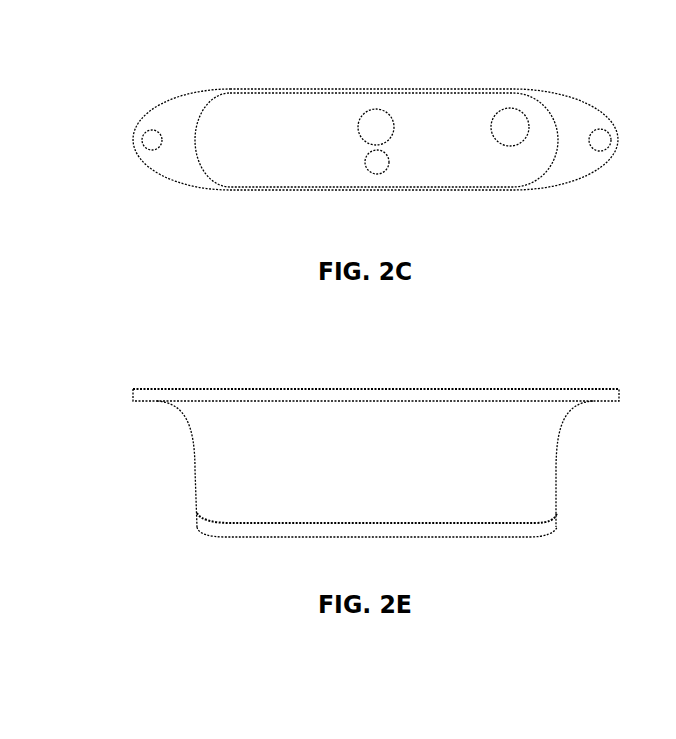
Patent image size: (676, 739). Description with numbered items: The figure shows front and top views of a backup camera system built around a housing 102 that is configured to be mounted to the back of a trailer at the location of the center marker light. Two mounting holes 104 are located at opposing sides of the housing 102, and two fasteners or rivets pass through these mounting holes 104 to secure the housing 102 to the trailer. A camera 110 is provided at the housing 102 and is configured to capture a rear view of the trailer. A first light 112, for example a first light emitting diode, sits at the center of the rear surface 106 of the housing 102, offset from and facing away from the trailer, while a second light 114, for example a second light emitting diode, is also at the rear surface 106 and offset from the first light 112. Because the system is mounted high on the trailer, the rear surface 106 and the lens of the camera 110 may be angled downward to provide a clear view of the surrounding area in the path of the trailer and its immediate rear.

In FIG. 2C, the housing 102 is at (577, 98).
In FIG. 2E, the housing 102 is at (554, 390).
In FIG. 2C, the mounting holes 104 is at (153, 140).
In FIG. 2E, the rear surface 106 is at (272, 537).
In FIG. 2C, the camera 110 is at (376, 163).
In FIG. 2C, the first light 112 is at (377, 110).
In FIG. 2C, the second light 114 is at (510, 110).